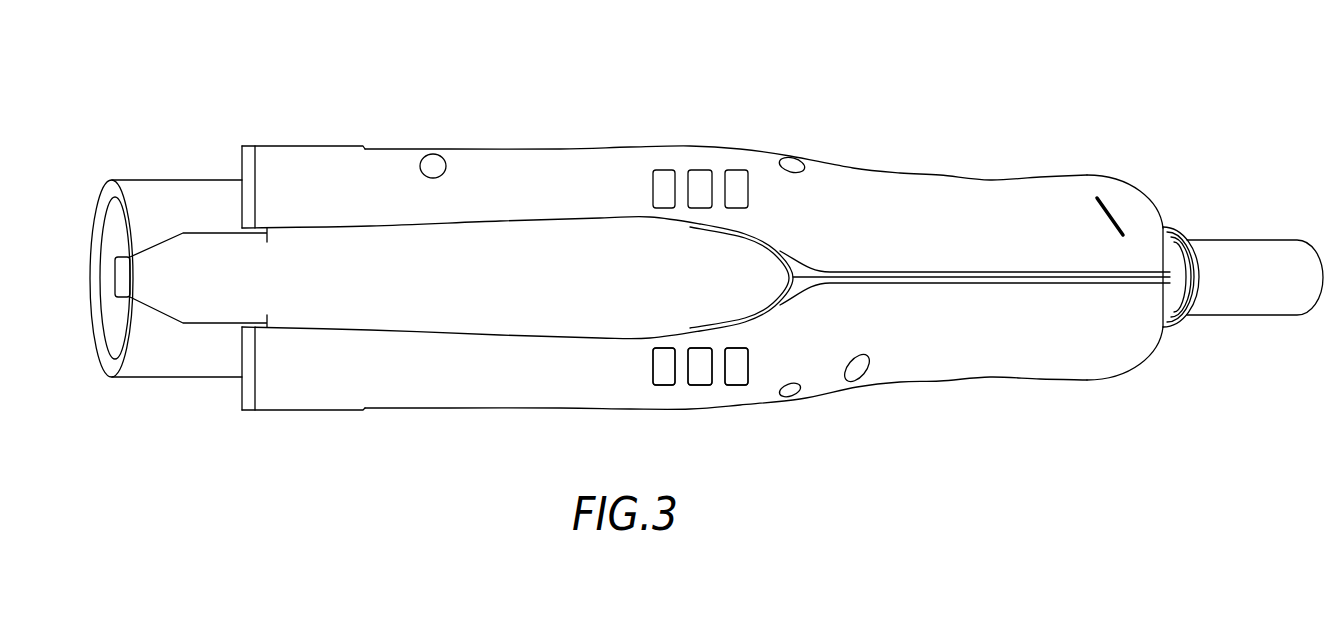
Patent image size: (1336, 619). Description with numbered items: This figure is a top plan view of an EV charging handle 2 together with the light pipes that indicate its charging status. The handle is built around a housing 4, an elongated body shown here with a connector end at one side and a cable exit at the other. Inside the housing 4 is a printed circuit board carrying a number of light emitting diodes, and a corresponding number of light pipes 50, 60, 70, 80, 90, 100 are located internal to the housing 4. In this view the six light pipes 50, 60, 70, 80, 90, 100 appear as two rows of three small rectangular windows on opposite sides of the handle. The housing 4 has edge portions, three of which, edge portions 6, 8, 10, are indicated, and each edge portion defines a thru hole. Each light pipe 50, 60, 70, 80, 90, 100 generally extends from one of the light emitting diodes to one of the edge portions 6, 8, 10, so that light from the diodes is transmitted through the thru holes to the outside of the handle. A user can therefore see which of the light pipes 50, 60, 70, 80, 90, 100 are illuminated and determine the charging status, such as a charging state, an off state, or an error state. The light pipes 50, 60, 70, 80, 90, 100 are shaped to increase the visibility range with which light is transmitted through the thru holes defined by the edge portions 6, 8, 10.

The EV charging handle 2 is at (706, 241).
The housing 4 is at (983, 347).
The edge portion 6 is at (743, 363).
The edge portion 8 is at (708, 357).
The edge portion 10 is at (663, 355).
The light pipe 50 is at (735, 384).
The light pipe 60 is at (703, 383).
The light pipe 70 is at (658, 379).
The light pipe 80 is at (735, 178).
The light pipe 90 is at (697, 178).
The light pipe 100 is at (663, 192).